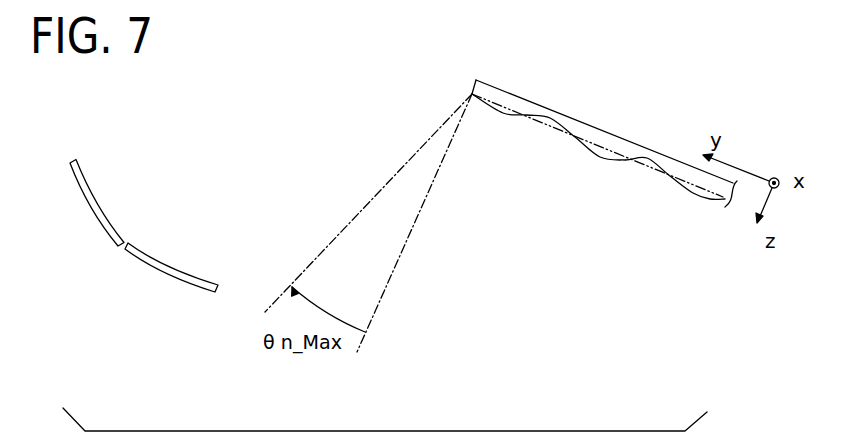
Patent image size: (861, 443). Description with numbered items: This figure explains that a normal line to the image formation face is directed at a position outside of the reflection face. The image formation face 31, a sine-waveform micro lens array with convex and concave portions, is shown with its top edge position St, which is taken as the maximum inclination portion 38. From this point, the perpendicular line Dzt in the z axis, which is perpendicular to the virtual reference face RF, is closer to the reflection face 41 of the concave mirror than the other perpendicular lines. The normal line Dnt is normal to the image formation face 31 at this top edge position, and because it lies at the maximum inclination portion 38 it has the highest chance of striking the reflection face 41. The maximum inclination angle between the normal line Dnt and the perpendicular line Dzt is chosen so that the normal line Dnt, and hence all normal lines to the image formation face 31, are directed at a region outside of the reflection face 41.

The reflection face 41 is at (92, 196).
The maximum inclination portion 38 is at (604, 150).
The image formation face 31 is at (603, 161).
The virtual reference face RF is at (647, 163).
The normal line Dnt is at (281, 292).
The perpendicular line Dzt is at (358, 349).